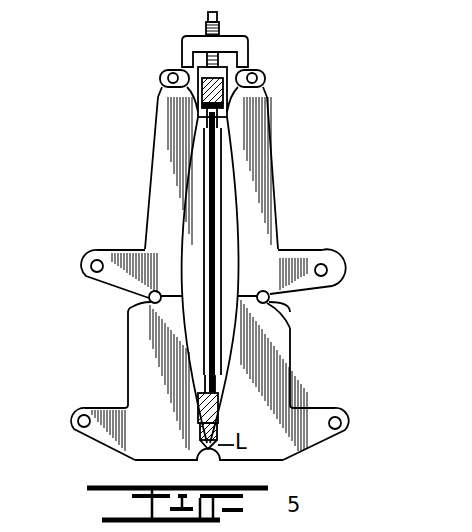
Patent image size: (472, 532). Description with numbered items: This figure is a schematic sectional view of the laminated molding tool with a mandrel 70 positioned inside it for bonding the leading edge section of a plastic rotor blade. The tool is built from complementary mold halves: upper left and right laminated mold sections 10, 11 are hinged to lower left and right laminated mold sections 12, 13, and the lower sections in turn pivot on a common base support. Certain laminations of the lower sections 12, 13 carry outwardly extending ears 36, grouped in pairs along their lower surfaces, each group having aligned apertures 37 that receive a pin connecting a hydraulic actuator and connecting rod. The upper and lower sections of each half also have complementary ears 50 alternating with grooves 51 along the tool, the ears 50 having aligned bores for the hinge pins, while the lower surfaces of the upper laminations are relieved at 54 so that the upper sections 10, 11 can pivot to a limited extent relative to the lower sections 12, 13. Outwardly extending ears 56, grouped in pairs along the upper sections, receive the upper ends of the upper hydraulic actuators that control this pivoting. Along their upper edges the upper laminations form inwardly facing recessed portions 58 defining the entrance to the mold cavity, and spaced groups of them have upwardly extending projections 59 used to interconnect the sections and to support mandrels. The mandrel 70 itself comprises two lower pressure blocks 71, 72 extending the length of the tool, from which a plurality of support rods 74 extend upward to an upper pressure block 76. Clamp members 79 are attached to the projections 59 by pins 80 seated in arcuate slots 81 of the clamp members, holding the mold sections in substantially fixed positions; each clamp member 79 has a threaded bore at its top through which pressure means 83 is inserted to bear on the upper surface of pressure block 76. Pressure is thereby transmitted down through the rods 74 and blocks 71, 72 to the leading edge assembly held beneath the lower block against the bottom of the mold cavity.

The upper left laminated mold section 10 is at (156, 140).
The upper right laminated mold section 11 is at (272, 155).
The lower left laminated mold section 12 is at (128, 357).
The lower right laminated mold section 13 is at (290, 362).
The outwardly extending ears 36 is at (316, 447).
The aligned apertures 37 is at (76, 419).
The complementary ears 50 is at (148, 308).
The grooves 51 is at (148, 300).
The relieved portion 54 is at (289, 296).
The outwardly extending ears 56 is at (110, 252).
The inwardly facing recessed portions 58 is at (190, 97).
The upwardly extending projections 59 is at (160, 88).
The mandrel 70 is at (205, 235).
The pressure block 71 is at (200, 411).
The pressure block 72 is at (200, 431).
The support cylinders or rods 74 is at (214, 197).
The pressure block 76 is at (223, 100).
The clamp members 79 is at (240, 43).
The pins 80 is at (168, 75).
The arcuate slots 81 is at (180, 72).
The pressure means 83 is at (220, 29).